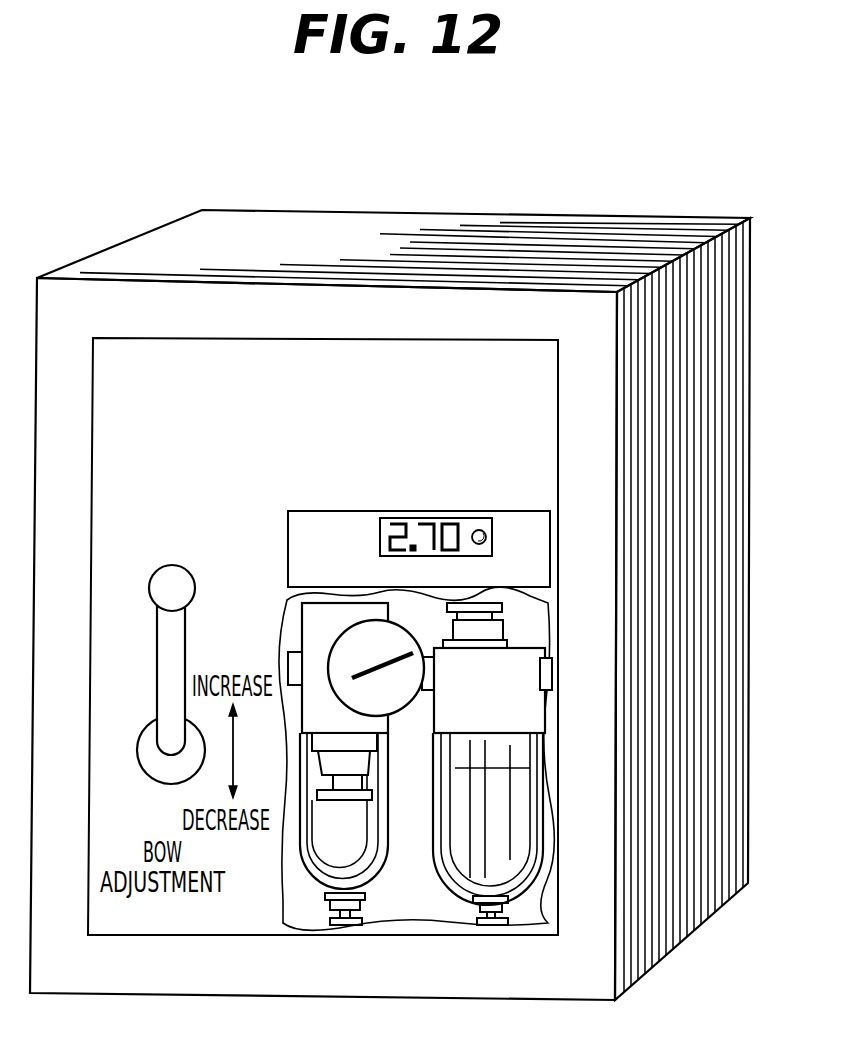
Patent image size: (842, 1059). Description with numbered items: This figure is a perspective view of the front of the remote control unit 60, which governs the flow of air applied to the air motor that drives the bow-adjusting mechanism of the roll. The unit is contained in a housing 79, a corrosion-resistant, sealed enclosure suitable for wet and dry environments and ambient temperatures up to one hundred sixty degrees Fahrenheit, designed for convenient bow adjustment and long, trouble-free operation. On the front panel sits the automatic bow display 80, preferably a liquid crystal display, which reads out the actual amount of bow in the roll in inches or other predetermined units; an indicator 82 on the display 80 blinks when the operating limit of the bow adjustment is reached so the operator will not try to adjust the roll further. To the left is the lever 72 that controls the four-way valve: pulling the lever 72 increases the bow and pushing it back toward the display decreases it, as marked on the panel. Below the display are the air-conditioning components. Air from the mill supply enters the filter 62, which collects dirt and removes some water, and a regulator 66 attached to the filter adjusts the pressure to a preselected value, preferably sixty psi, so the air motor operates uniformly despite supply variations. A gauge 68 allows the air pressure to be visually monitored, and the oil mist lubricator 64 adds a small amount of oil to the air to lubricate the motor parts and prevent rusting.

The remote control unit 60 is at (402, 204).
The housing 79 is at (657, 238).
The automatic bow display 80 is at (316, 511).
The indicator 82 is at (481, 530).
The lever 72 is at (157, 627).
The regulator 66 is at (302, 612).
The gauge 68 is at (418, 646).
The filter 62 is at (372, 885).
The oil mist lubricator 64 is at (522, 890).